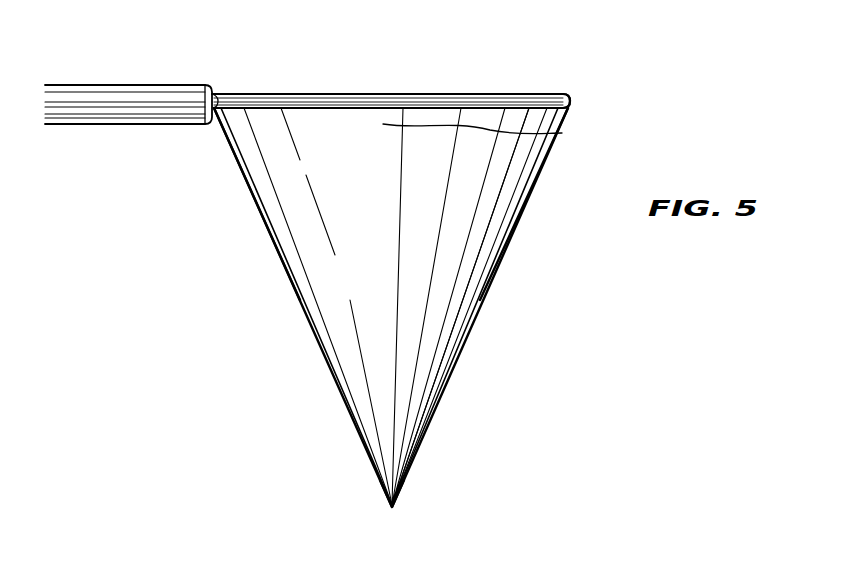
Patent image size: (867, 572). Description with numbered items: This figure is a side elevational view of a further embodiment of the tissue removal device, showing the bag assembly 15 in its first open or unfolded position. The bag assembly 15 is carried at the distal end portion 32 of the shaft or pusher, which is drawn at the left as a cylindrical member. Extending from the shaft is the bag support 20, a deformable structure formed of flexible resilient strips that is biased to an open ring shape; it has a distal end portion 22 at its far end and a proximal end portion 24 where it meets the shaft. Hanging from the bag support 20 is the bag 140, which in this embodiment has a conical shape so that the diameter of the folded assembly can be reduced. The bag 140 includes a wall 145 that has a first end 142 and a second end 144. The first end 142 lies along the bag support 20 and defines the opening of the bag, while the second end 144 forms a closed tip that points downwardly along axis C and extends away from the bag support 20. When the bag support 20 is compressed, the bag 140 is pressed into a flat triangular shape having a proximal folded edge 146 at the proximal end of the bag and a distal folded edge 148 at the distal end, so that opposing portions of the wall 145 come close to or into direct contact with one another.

The bag assembly 15 is at (466, 52).
The bag support 20 is at (383, 94).
The distal end portion 22 is at (566, 93).
The proximal end portion 24 is at (218, 96).
The distal end portion 32 is at (206, 88).
The bag 140 is at (465, 392).
The first end 142 is at (562, 133).
The second end 144 is at (388, 462).
The wall 145 is at (445, 272).
The proximal folded edge 146 is at (242, 178).
The distal folded edge 148 is at (535, 183).